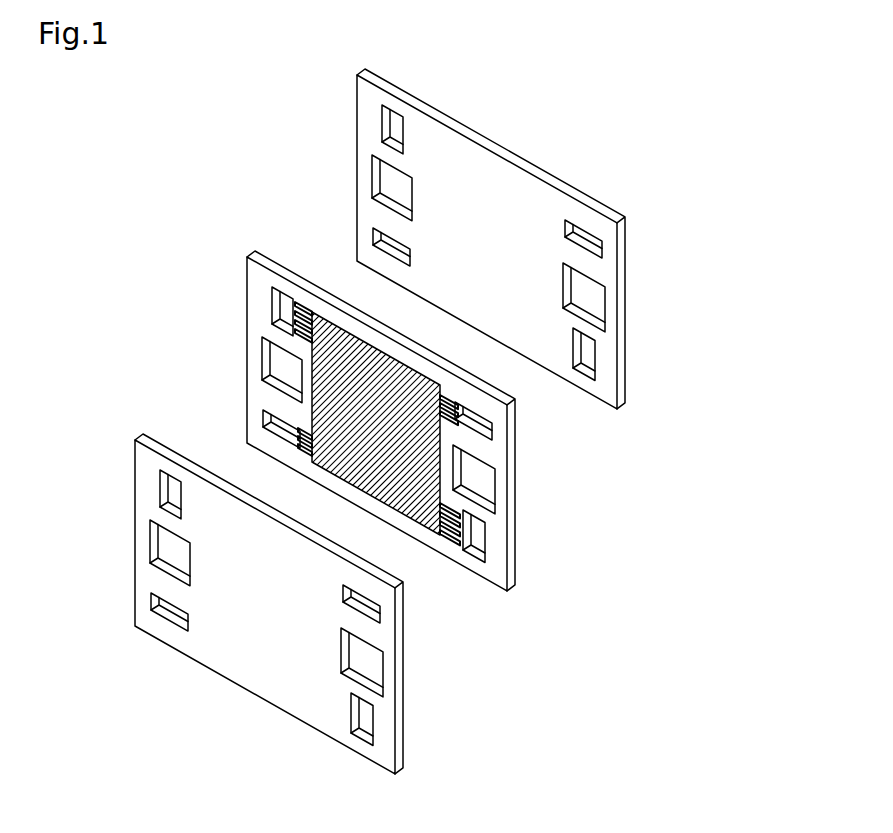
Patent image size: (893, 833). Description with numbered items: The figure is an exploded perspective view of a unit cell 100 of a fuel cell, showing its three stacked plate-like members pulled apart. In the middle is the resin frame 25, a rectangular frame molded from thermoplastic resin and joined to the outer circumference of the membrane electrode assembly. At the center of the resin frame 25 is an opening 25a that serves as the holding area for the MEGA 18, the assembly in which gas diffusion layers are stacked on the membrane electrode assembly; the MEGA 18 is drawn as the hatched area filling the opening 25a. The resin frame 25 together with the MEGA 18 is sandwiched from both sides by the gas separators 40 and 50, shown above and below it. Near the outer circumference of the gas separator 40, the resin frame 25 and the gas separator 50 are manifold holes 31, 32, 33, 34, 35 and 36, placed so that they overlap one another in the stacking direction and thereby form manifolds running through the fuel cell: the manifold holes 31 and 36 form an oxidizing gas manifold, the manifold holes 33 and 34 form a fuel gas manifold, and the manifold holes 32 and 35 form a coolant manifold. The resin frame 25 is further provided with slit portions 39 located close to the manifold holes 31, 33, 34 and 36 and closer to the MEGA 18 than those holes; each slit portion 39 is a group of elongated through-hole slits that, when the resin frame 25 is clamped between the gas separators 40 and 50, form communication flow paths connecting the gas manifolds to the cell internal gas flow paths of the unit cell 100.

The unit cell 100 is at (715, 173).
The gas separator 40 is at (510, 150).
The resin frame 25 is at (515, 567).
The opening 25a is at (325, 319).
The membrane electrode gas diffusion layer assembly (MEGA) 18 is at (352, 466).
The gas separator 50 is at (267, 698).
The manifold hole 31 is at (382, 118).
The manifold hole 32 is at (372, 176).
The manifold hole 33 is at (373, 234).
The manifold hole 34 is at (602, 240).
The manifold hole 35 is at (605, 302).
The manifold hole 36 is at (595, 356).
The slit portions 39 is at (297, 305).